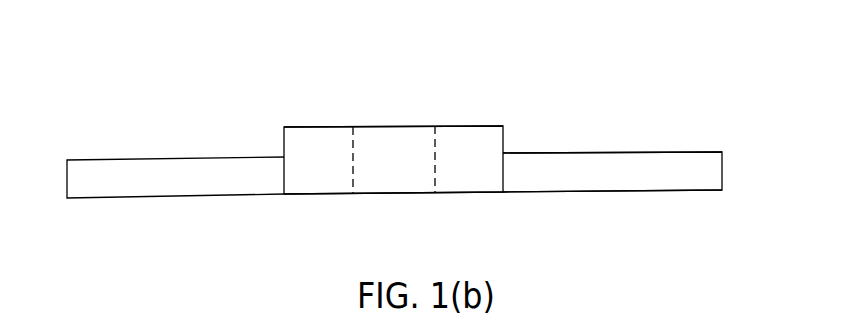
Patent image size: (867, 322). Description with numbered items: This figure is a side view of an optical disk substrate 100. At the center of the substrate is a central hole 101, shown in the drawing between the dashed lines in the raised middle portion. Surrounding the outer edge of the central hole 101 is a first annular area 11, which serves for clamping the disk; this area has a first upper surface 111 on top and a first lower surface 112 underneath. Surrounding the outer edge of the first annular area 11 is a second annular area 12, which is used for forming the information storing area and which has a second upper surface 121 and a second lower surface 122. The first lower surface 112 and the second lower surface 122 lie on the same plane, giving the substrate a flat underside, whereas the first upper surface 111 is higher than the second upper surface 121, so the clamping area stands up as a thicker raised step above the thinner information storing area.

The optical disk substrate 100 is at (82, 63).
The first annular area 11 is at (458, 137).
The first upper surface 111 is at (325, 127).
The first lower surface 112 is at (322, 194).
The central hole 101 is at (390, 148).
The second annular area 12 is at (696, 158).
The second upper surface 121 is at (620, 153).
The second lower surface 122 is at (618, 191).